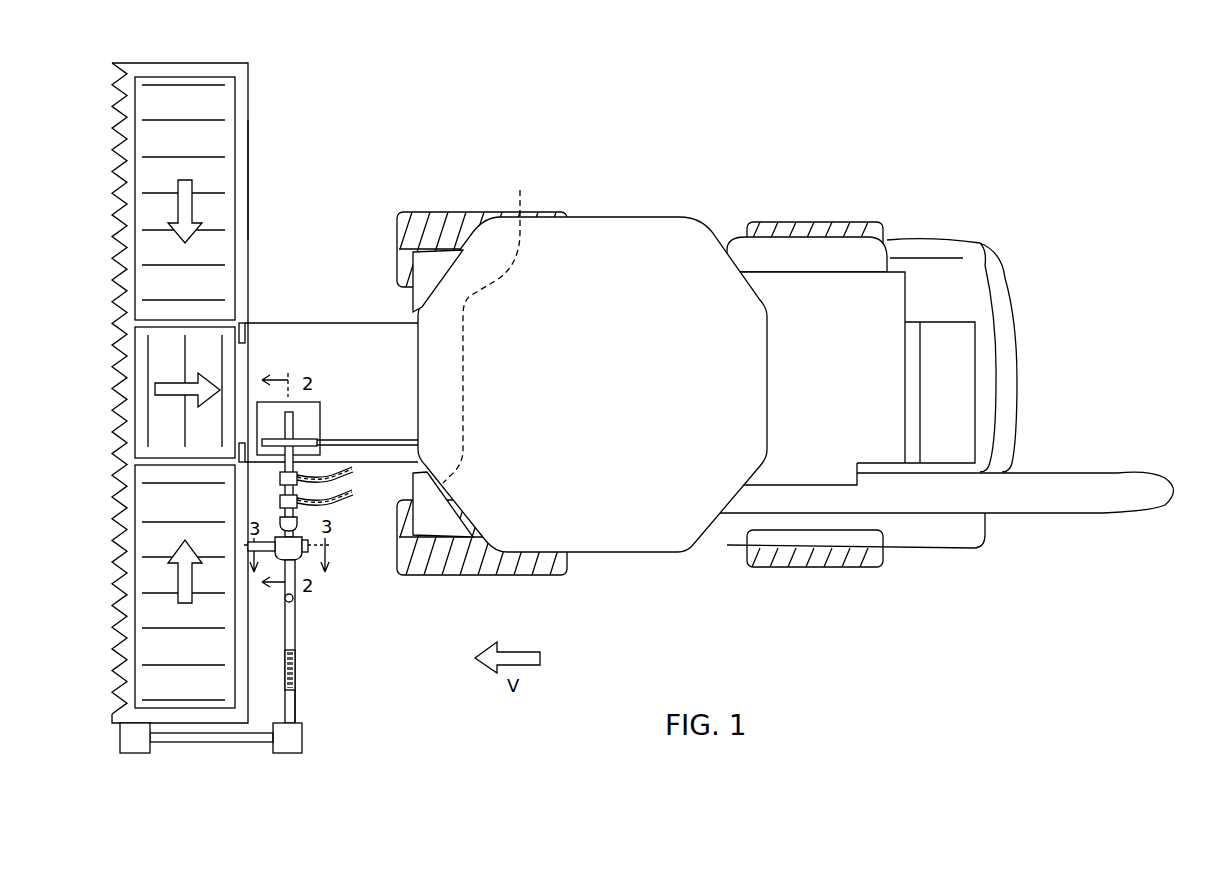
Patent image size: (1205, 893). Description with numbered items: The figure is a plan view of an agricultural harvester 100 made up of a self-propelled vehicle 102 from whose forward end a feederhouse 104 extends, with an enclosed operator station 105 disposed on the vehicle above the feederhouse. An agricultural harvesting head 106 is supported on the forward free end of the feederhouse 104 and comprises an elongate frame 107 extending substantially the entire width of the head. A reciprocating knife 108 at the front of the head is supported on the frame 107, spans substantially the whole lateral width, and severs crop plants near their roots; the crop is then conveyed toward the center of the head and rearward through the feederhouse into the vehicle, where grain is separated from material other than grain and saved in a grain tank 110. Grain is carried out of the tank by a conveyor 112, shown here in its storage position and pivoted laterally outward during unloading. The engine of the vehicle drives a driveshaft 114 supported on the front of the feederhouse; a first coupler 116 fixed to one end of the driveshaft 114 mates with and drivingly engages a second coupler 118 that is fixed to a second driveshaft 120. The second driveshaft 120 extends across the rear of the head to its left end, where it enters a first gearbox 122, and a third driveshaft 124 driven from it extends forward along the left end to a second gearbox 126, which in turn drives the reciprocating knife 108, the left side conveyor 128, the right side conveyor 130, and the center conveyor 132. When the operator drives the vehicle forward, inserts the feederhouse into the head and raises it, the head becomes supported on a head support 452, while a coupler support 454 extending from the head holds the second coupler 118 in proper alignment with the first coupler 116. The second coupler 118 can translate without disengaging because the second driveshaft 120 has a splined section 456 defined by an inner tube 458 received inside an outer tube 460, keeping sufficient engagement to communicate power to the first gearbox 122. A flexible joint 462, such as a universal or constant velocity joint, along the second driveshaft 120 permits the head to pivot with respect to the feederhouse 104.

The agricultural harvester 100 is at (652, 128).
The self-propelled vehicle 102 is at (615, 217).
The feederhouse 104 is at (330, 322).
The operator station 105 is at (520, 212).
The agricultural harvesting head 106 is at (248, 130).
The frame 107 is at (248, 212).
The reciprocating knife 108 is at (115, 103).
The grain tank 110 is at (785, 373).
The conveyor 112 is at (1060, 473).
The driveshaft 114 is at (295, 425).
The first coupler 116 is at (298, 522).
The second coupler 118 is at (303, 560).
The second driveshaft 120 is at (294, 665).
The first gearbox 122 is at (300, 737).
The third driveshaft 124 is at (205, 742).
The second gearbox 126 is at (140, 748).
The left side conveyor 128 is at (122, 548).
The right side conveyor 130 is at (122, 210).
The center conveyor 132 is at (122, 352).
The head support 452 is at (242, 322).
The coupler support 454 is at (308, 537).
The splined section 456 is at (294, 675).
The inner tube 458 is at (293, 630).
The outer tube 460 is at (294, 707).
The flexible joint 462 is at (292, 598).